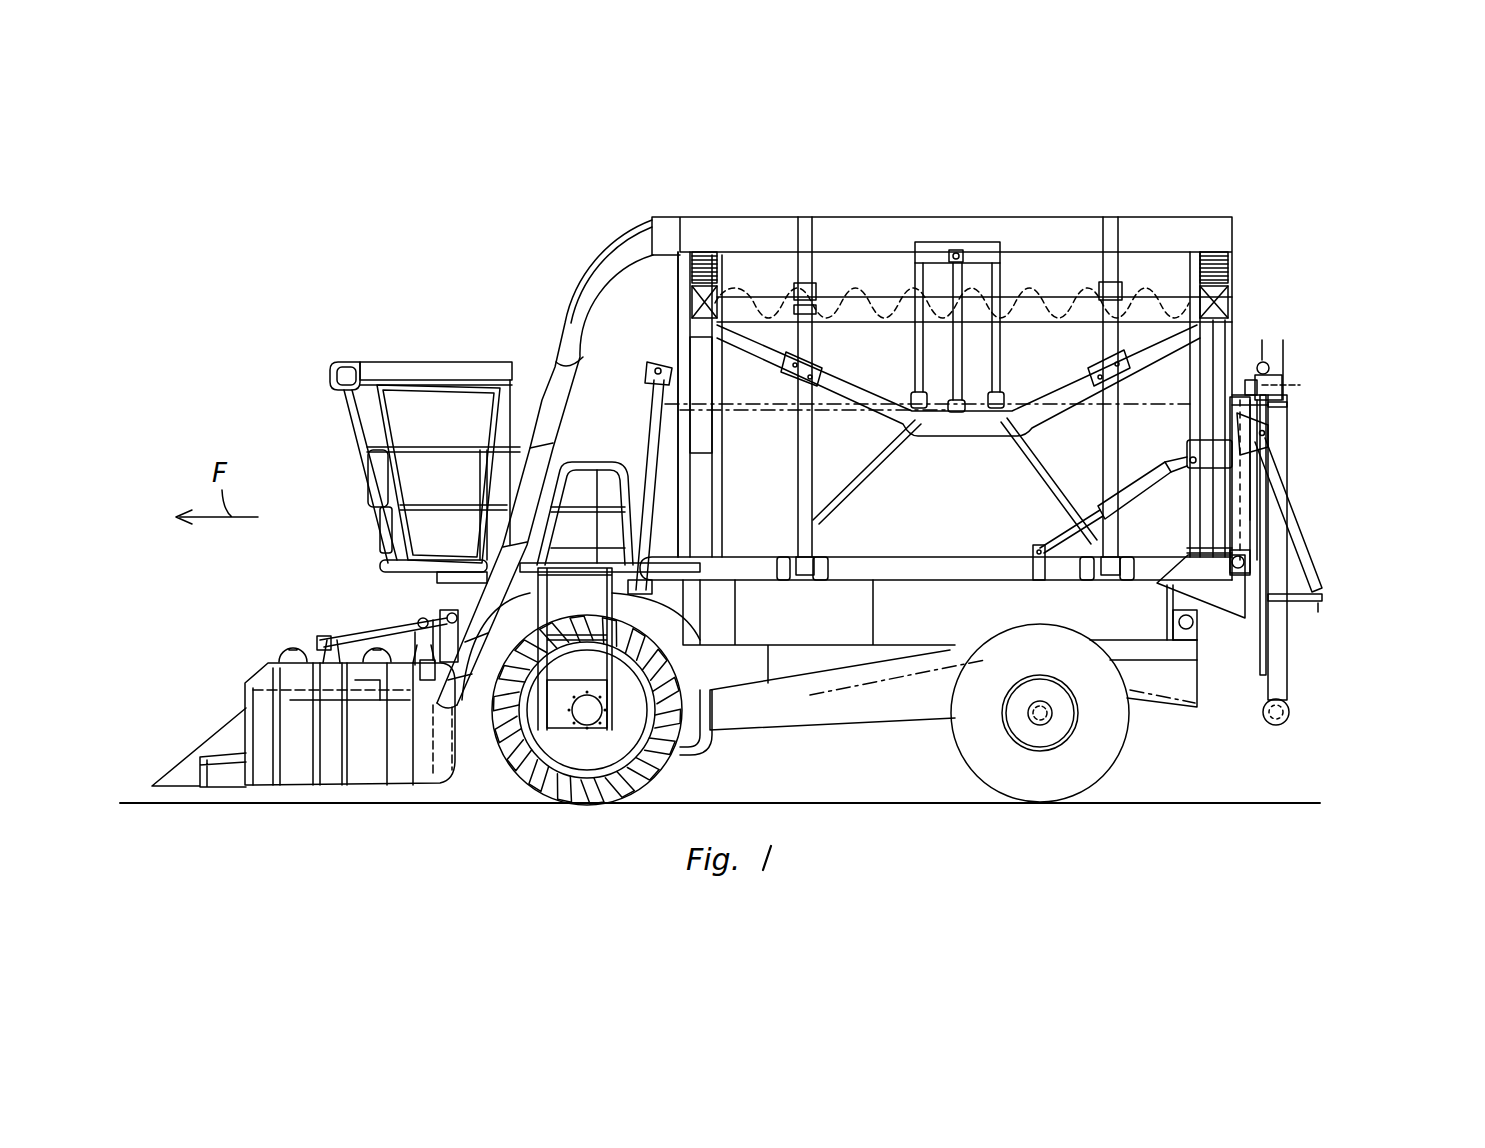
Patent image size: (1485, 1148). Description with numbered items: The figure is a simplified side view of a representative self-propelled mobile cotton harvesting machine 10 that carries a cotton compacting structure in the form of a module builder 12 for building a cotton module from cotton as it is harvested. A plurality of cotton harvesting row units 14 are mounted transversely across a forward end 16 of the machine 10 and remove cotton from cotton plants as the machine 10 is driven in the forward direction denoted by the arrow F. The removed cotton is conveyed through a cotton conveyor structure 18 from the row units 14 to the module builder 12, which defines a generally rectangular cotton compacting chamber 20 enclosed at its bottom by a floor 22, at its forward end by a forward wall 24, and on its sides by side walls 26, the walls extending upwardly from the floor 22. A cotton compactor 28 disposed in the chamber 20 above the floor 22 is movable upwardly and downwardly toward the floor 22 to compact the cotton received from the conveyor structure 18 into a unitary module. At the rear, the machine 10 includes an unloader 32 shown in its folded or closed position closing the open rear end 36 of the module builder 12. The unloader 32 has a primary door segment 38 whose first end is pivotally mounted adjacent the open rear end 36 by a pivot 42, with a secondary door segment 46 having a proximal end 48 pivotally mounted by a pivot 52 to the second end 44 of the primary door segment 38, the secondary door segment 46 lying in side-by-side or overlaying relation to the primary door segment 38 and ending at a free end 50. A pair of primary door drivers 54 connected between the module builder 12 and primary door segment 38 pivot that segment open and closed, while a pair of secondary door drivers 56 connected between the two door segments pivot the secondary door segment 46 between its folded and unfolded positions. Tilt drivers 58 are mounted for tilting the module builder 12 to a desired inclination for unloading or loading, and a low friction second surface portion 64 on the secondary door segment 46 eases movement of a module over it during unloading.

The cotton harvesting machine 10 is at (1291, 170).
The module builder 12 is at (1248, 222).
The cotton harvesting row units 14 is at (285, 663).
The forward end 16 is at (480, 700).
The cotton conveyor structure 18 is at (556, 345).
The cotton compacting chamber 20 is at (1167, 368).
The floor 22 is at (975, 557).
The forward wall 24 is at (677, 318).
The side walls 26 is at (1020, 355).
The cotton compactor 28 is at (1240, 306).
The unloader 32 is at (1308, 452).
The open rear end 36 is at (1232, 498).
The primary door segment 38 is at (1252, 544).
The pivot 42 is at (1240, 575).
The second end 44 is at (1292, 402).
The secondary door segment 46 is at (1287, 626).
The proximal end 48 is at (1290, 417).
The free end 50 is at (1285, 690).
The pivot 52 is at (1275, 371).
The primary door drivers 54 is at (1137, 500).
The secondary door drivers 56 is at (1315, 568).
The tilt drivers 58 is at (652, 415).
The second surface portion 64 is at (1292, 672).